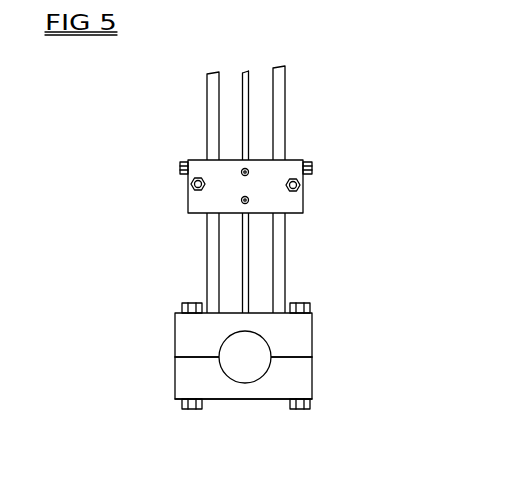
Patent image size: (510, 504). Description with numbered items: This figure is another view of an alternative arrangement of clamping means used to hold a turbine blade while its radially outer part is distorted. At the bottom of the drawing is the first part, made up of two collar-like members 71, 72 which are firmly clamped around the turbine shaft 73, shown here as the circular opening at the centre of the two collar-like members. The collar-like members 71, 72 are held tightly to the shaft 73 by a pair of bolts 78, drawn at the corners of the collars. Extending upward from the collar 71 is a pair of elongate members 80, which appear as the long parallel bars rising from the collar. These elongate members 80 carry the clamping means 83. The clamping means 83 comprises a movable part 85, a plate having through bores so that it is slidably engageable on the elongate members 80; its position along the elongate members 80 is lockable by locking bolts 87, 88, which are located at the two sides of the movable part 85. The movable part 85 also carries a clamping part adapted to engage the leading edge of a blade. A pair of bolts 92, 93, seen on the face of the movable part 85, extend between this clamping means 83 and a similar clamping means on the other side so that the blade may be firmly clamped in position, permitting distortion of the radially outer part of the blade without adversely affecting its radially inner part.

The collar-like member 71 is at (306, 338).
The collar-like member 72 is at (307, 384).
The turbine shaft 73 is at (255, 374).
The bolts 78 is at (188, 303).
The elongate members 80 is at (210, 123).
The clamping means 83 is at (300, 146).
The movable part 85 is at (291, 204).
The locking bolt 87 is at (312, 168).
The locking bolt 88 is at (180, 166).
The bolt 92 is at (302, 190).
The bolt 93 is at (190, 184).